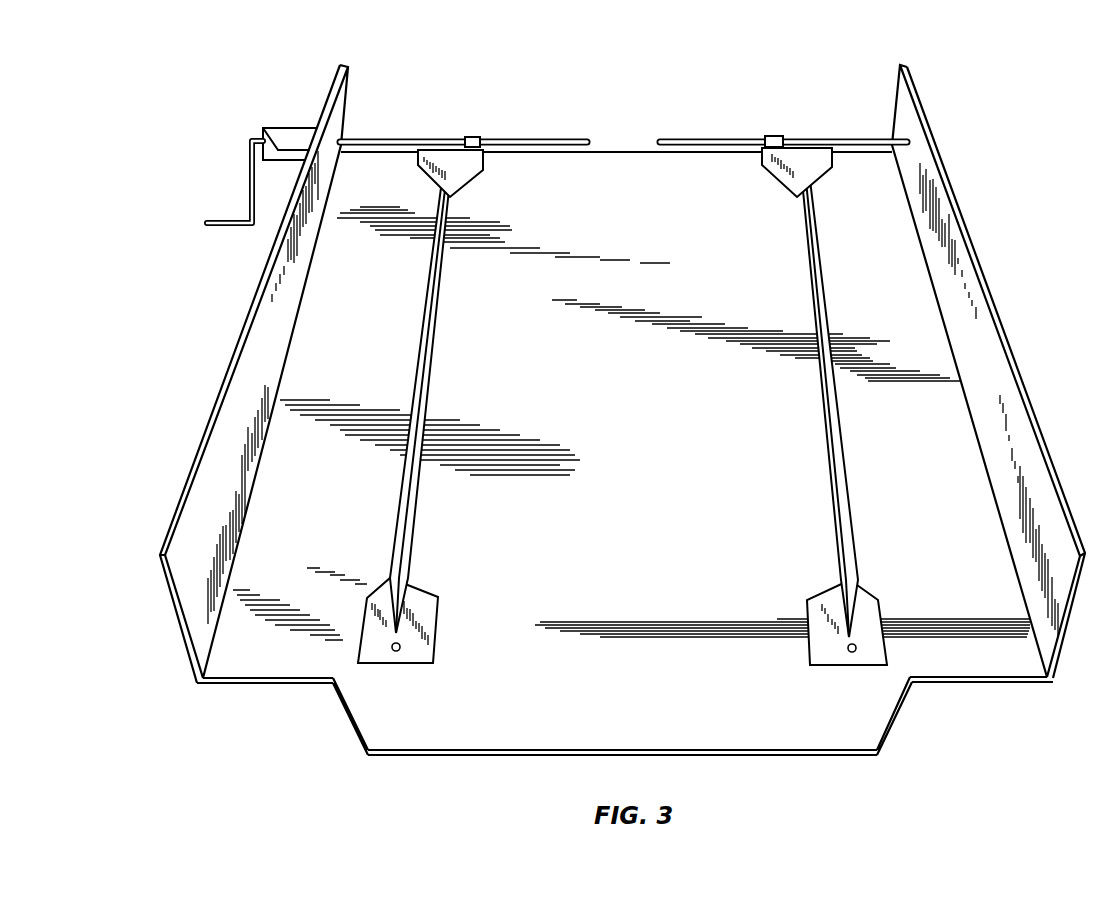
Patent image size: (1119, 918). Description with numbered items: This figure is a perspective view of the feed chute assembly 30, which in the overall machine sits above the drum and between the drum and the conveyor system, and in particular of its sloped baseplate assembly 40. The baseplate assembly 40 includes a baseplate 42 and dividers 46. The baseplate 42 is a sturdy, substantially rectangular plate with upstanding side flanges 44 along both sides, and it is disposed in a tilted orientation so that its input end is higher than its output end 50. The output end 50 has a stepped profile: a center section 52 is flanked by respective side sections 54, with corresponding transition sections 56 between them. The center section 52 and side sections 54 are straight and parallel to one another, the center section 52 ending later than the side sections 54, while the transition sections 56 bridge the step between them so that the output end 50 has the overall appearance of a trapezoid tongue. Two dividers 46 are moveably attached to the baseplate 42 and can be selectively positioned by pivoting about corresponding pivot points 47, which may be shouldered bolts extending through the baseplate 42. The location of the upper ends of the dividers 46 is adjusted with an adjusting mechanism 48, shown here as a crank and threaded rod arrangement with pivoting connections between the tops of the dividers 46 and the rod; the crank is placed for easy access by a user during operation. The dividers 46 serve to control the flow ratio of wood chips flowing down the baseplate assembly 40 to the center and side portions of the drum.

The feed chute assembly 30 is at (615, 418).
The baseplate assembly 40 is at (1003, 276).
The baseplate 42 is at (630, 165).
The side flanges 44 is at (198, 465).
The dividers 46 is at (805, 270).
The pivot points 47 is at (400, 652).
The adjusting mechanism 48 is at (236, 131).
The output end 50 is at (625, 482).
The center section 52 is at (818, 752).
The side sections 54 is at (250, 680).
The transition sections 56 is at (343, 712).